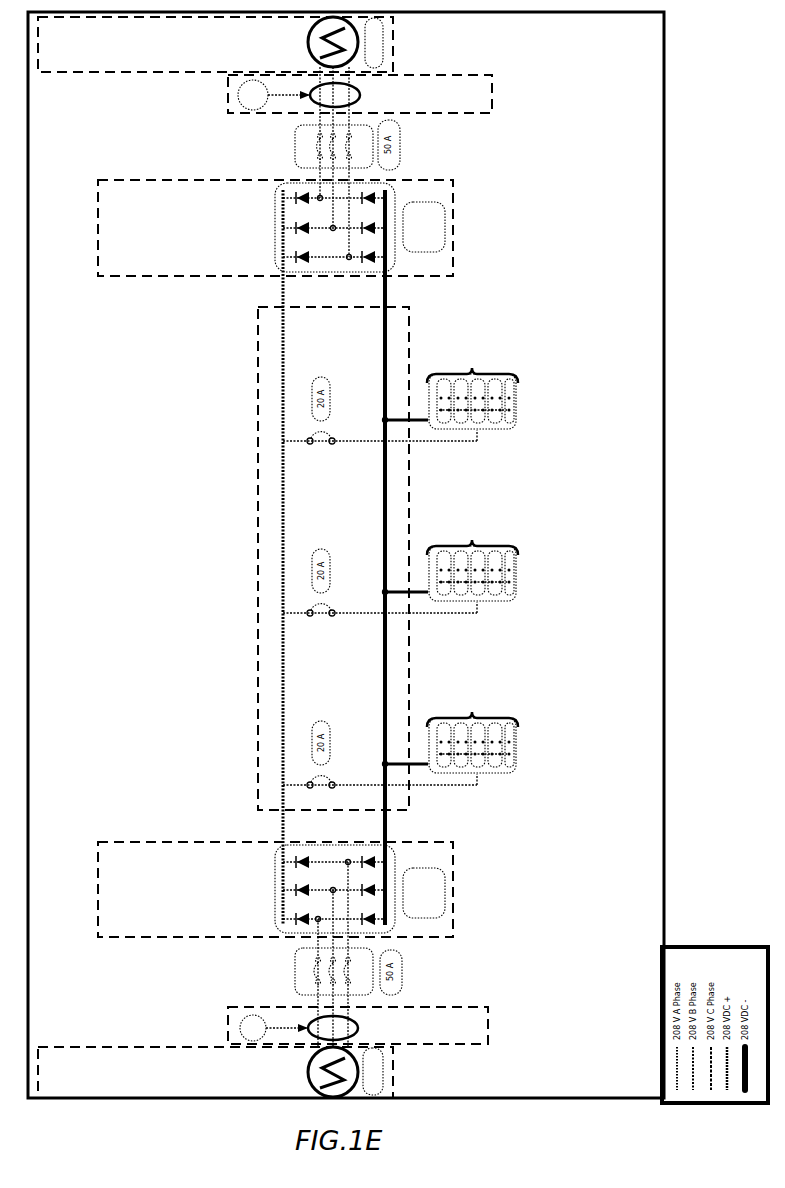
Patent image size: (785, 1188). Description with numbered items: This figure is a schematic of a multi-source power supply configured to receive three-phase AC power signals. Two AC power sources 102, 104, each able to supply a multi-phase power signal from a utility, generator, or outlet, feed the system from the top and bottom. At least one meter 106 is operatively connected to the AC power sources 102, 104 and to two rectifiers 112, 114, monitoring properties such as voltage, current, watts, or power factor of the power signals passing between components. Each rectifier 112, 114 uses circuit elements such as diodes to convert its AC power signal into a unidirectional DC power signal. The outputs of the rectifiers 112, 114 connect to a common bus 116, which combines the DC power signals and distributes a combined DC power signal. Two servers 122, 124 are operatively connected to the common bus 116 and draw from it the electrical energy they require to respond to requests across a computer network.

The AC power source 102 is at (215, 44).
The AC power source 104 is at (215, 1072).
The meter 106 is at (360, 559).
The rectifier 112 is at (275, 228).
The rectifier 114 is at (275, 889).
The common bus 116 is at (367, 557).
The server 122 is at (524, 527).
The server 124 is at (524, 699).